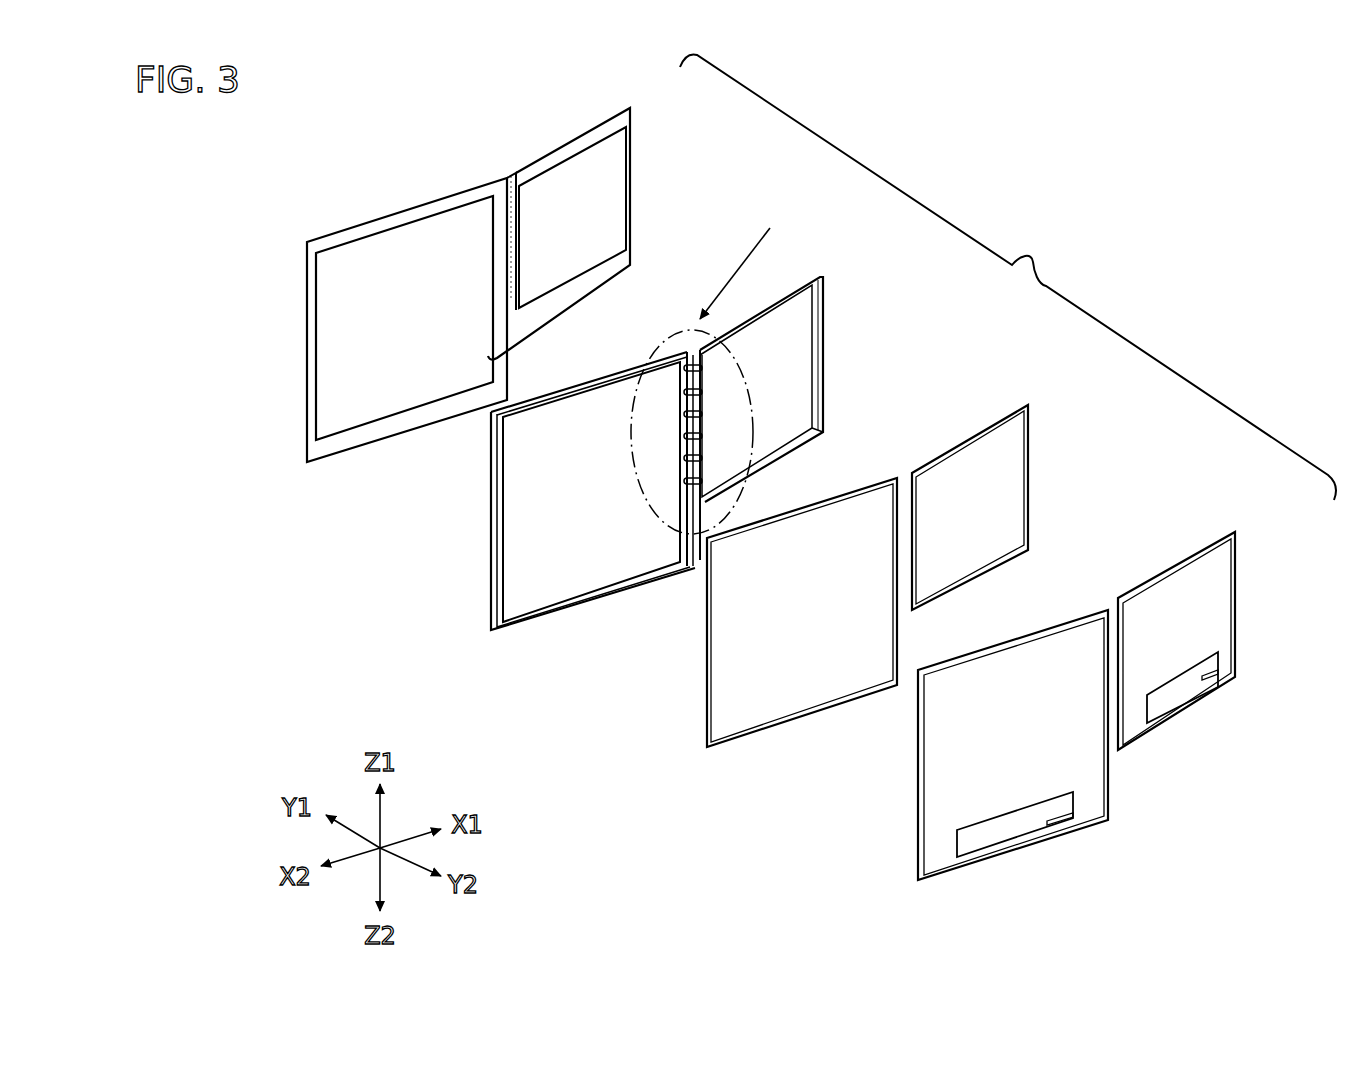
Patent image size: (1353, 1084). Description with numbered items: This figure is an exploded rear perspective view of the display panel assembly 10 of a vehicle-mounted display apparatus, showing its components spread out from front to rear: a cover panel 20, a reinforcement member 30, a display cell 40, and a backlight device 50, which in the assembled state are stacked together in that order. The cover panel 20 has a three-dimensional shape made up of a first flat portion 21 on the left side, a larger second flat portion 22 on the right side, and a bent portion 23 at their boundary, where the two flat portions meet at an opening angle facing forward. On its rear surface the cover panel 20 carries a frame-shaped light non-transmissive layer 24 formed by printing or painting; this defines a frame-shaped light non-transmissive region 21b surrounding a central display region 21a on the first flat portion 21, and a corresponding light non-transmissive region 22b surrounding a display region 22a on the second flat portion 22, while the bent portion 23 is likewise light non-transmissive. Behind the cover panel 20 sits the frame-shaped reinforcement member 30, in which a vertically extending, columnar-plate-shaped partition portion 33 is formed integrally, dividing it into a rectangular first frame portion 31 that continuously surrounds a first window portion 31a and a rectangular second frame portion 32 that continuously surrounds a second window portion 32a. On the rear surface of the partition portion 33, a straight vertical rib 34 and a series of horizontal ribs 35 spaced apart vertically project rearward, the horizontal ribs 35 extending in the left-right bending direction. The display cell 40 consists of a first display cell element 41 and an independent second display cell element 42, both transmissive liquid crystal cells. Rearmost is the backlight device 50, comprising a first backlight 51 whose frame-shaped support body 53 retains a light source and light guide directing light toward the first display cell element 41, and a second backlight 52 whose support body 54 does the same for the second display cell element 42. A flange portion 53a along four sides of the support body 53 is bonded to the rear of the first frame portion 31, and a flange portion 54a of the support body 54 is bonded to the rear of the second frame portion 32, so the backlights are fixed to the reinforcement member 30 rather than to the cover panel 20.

The display panel assembly 10 is at (1008, 278).
The cover panel 20 is at (469, 281).
The first flat portion 21 is at (582, 135).
The display region 21a is at (600, 202).
The light non-transmissive region 21b is at (622, 261).
The second flat portion 22 is at (352, 228).
The display region 22a is at (347, 407).
The light non-transmissive region 22b is at (377, 430).
The bent portion 23 is at (507, 178).
The light non-transmissive layer 24 is at (537, 307).
The reinforcement member 30 is at (651, 440).
The first frame portion 31 is at (822, 356).
The first window portion 31a is at (808, 322).
The second frame portion 32 is at (551, 519).
The second window portion 32a is at (537, 603).
The partition portion 33 is at (675, 413).
The vertical rib 34 is at (683, 447).
The horizontal ribs 35 is at (684, 470).
The display cell 40 is at (815, 555).
The first display cell element 41 is at (968, 432).
The second display cell element 42 is at (853, 483).
The backlight device 50 is at (1046, 723).
The first backlight 51 is at (1153, 578).
The second backlight 52 is at (1092, 615).
The support body 53 is at (1207, 668).
The flange portion 53a is at (1217, 687).
The support body 54 is at (960, 738).
The flange portion 54a is at (915, 728).